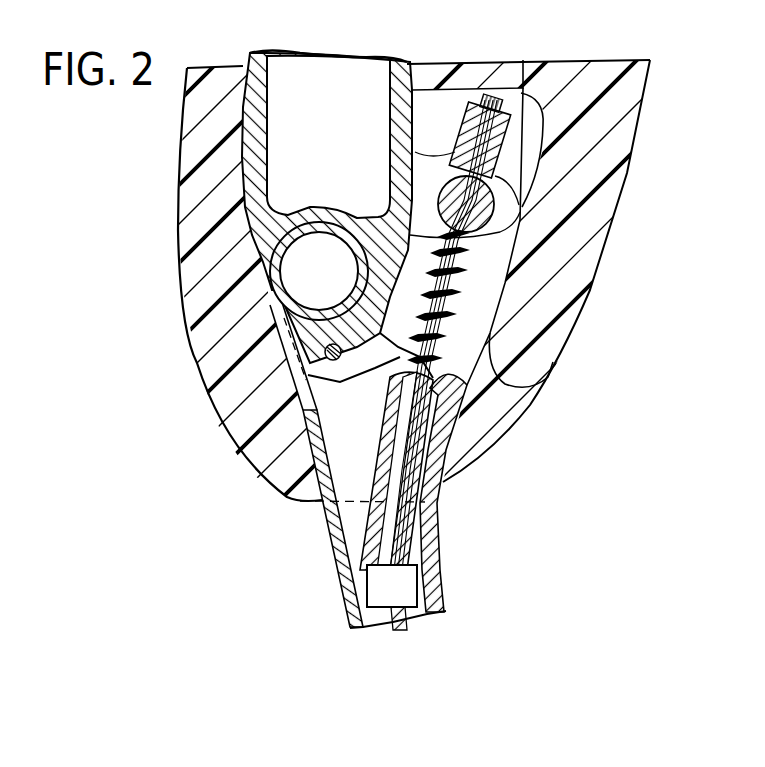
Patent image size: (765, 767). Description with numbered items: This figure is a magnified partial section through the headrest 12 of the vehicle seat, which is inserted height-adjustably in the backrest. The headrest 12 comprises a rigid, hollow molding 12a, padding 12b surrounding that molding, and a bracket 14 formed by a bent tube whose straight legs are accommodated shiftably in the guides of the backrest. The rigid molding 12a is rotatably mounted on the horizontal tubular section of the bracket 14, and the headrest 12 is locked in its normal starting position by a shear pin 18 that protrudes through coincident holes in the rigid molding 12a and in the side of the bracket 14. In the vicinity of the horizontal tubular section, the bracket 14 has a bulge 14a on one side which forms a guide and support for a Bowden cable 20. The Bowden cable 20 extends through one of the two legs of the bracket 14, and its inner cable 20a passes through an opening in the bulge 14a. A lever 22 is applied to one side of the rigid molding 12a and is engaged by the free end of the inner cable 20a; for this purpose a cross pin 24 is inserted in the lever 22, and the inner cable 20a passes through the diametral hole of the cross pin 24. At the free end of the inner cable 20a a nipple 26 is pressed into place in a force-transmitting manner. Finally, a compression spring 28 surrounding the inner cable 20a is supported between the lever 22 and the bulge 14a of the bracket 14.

The headrest 12 is at (166, 267).
The rigid hollow molding 12a is at (258, 237).
The padding 12b is at (200, 182).
The bracket 14 is at (333, 520).
The bulge 14a is at (442, 446).
The shear pin 18 is at (325, 354).
The Bowden cable 20 is at (397, 580).
The inner cable 20a is at (455, 291).
The lever 22 is at (502, 187).
The cross pin 24 is at (498, 216).
The nipple 26 is at (520, 92).
The compression spring 28 is at (548, 370).